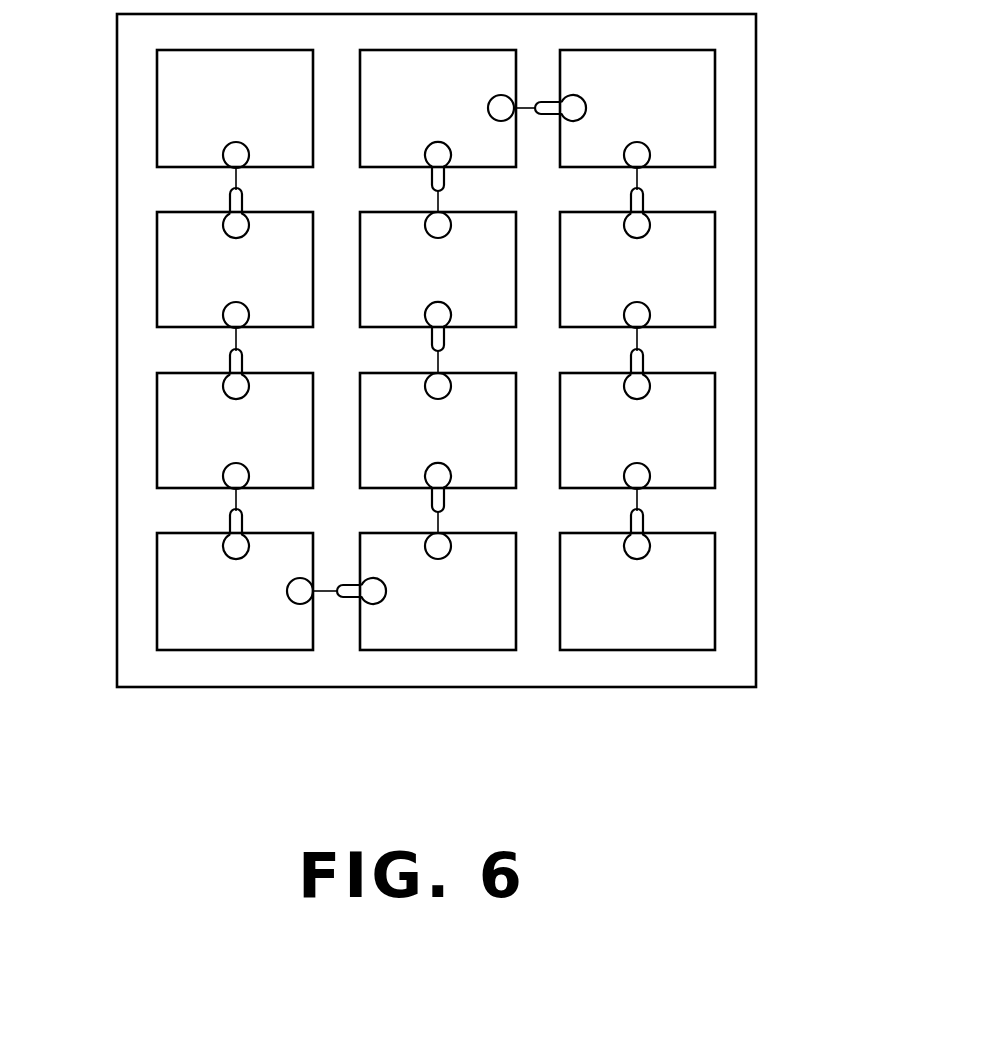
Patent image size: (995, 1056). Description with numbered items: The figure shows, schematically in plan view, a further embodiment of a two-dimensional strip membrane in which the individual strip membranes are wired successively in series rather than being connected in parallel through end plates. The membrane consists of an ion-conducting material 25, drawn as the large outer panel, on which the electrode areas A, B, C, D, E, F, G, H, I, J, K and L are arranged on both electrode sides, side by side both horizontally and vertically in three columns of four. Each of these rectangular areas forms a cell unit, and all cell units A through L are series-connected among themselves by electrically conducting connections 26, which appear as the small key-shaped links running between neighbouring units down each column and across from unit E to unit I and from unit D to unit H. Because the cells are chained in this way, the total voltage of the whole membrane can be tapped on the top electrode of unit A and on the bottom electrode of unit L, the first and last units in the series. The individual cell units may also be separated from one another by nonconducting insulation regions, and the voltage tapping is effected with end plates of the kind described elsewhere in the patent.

The ion-conducting material 25 is at (733, 261).
The electrically conducting connection 26 is at (230, 200).
The cell unit A is at (235, 108).
The cell unit B is at (235, 269).
The cell unit C is at (235, 430).
The cell unit D is at (235, 591).
The cell unit E is at (438, 108).
The cell unit F is at (438, 269).
The cell unit G is at (438, 430).
The cell unit H is at (438, 591).
The cell unit I is at (637, 108).
The cell unit J is at (637, 269).
The cell unit K is at (637, 430).
The cell unit L is at (637, 591).